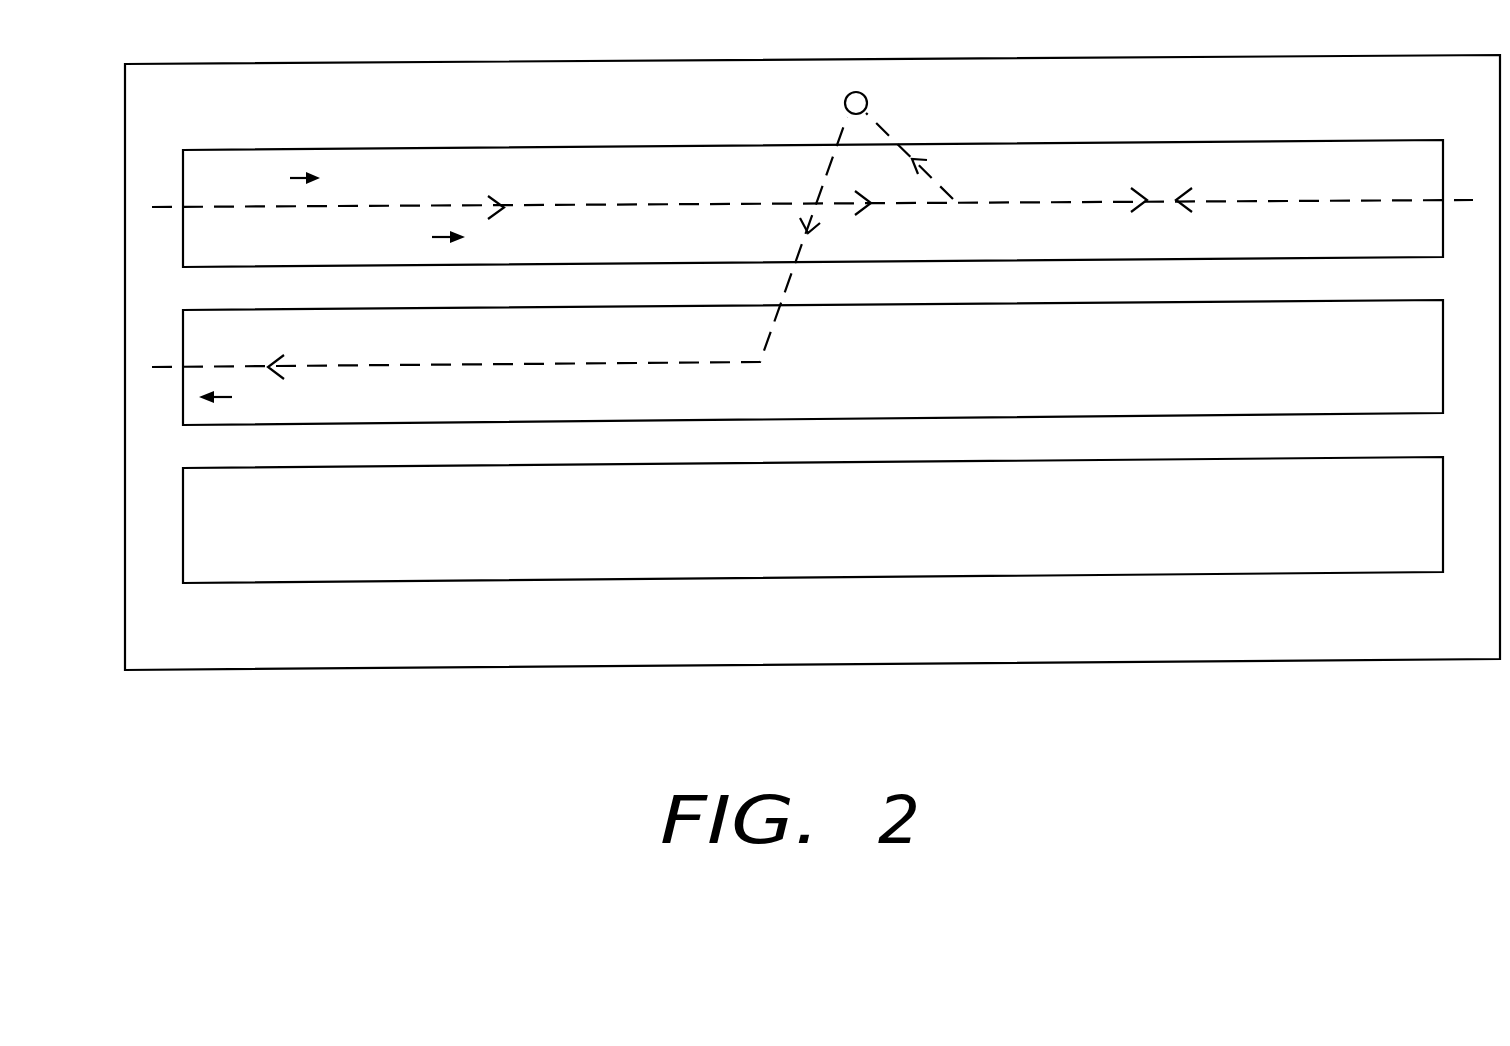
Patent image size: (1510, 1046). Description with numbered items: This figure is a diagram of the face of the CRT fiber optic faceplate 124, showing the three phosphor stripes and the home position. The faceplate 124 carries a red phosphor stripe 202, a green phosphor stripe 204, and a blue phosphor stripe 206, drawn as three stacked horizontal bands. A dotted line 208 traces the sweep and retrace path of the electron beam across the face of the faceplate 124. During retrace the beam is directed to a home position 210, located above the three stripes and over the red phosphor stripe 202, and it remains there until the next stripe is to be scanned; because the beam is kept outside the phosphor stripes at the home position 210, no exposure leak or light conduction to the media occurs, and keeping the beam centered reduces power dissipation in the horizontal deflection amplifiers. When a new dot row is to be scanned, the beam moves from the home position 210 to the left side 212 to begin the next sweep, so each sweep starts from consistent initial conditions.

The fiber optic faceplate 124 is at (1123, 56).
The red phosphor stripe 202 is at (1340, 141).
The green phosphor stripe 204 is at (1340, 301).
The blue phosphor stripe 206 is at (1340, 458).
The dotted line 208 is at (1237, 201).
The home position 210 is at (845, 101).
The left side 212 is at (183, 330).